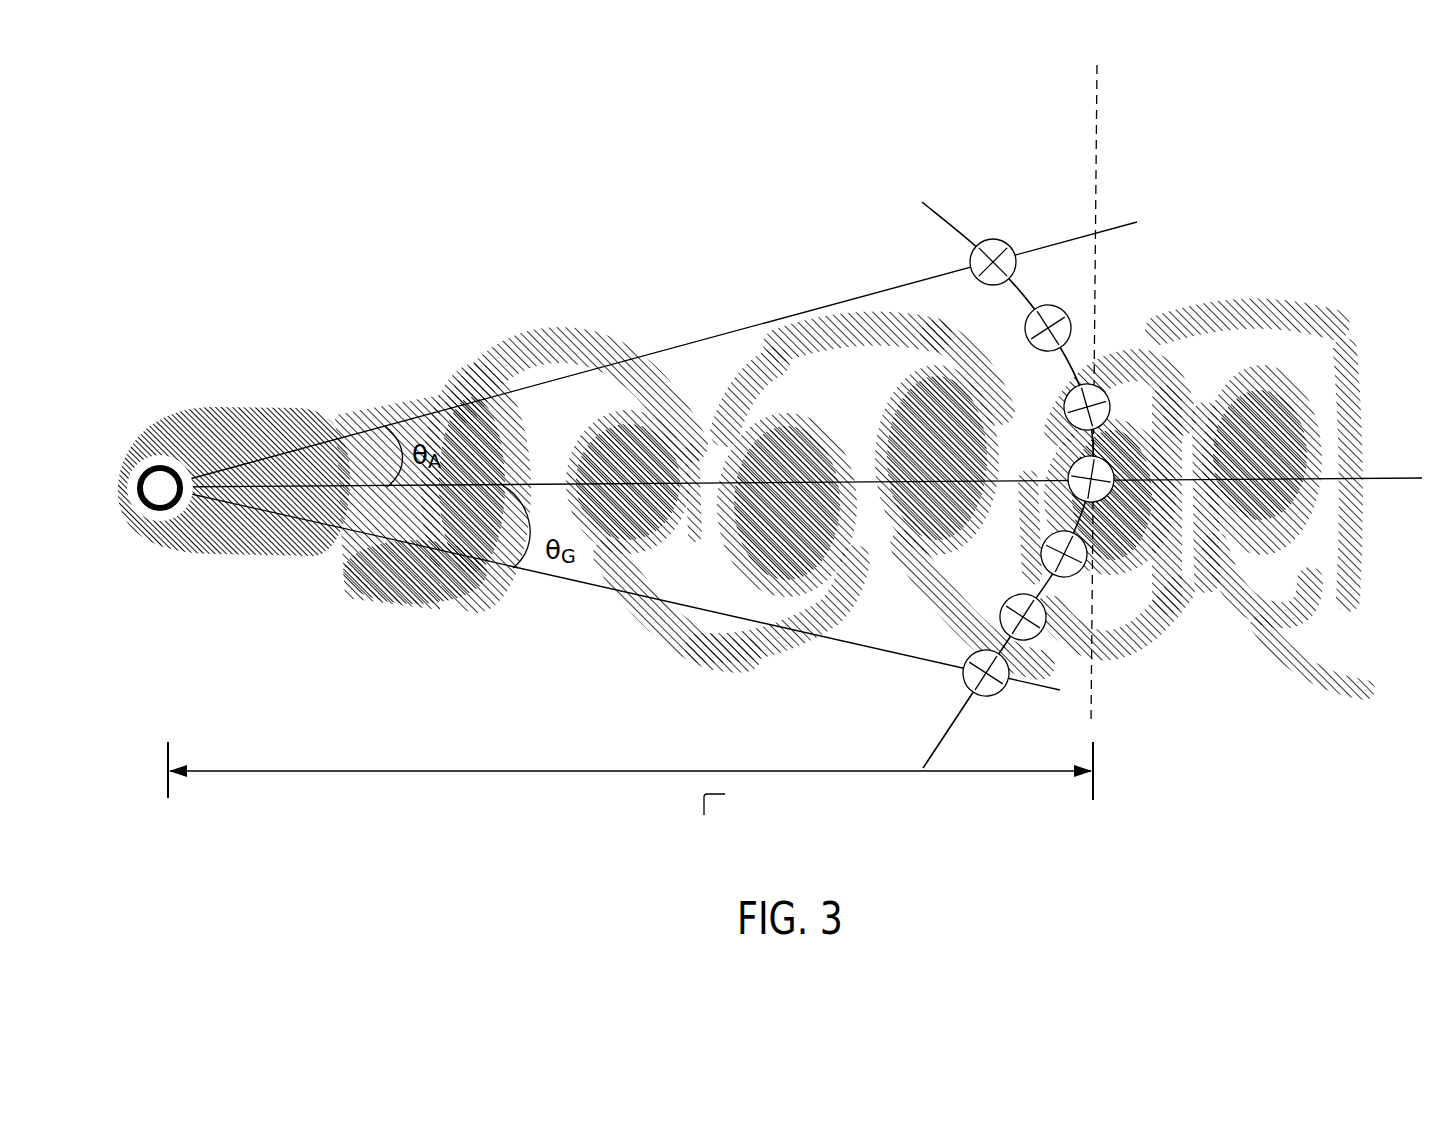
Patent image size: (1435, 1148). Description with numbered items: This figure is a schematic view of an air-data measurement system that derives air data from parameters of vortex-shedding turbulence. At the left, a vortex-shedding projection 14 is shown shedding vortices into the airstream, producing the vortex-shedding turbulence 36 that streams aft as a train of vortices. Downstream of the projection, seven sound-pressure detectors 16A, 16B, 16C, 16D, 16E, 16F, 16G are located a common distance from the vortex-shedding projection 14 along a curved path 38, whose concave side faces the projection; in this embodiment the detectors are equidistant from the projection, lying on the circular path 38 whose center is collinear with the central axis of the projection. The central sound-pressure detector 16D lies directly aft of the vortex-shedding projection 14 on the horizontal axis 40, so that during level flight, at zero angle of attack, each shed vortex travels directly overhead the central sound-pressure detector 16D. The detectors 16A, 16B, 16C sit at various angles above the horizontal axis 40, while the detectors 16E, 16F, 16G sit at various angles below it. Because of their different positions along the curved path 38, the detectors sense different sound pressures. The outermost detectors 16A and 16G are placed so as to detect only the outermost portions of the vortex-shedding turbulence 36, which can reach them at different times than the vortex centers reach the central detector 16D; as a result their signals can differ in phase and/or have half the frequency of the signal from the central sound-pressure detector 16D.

The vortex-shedding projection 14 is at (160, 487).
The sound-pressure detector 16A is at (1018, 236).
The sound-pressure detector 16B is at (1070, 294).
The sound-pressure detector 16C is at (1114, 366).
The central sound-pressure detector 16D is at (1125, 455).
The sound-pressure detector 16E is at (1102, 556).
The sound-pressure detector 16F is at (1053, 642).
The sound-pressure detector 16G is at (958, 682).
The vortex-shedding turbulence 36 is at (594, 298).
The curved path 38 is at (938, 211).
The horizontal axis 40 is at (1397, 478).